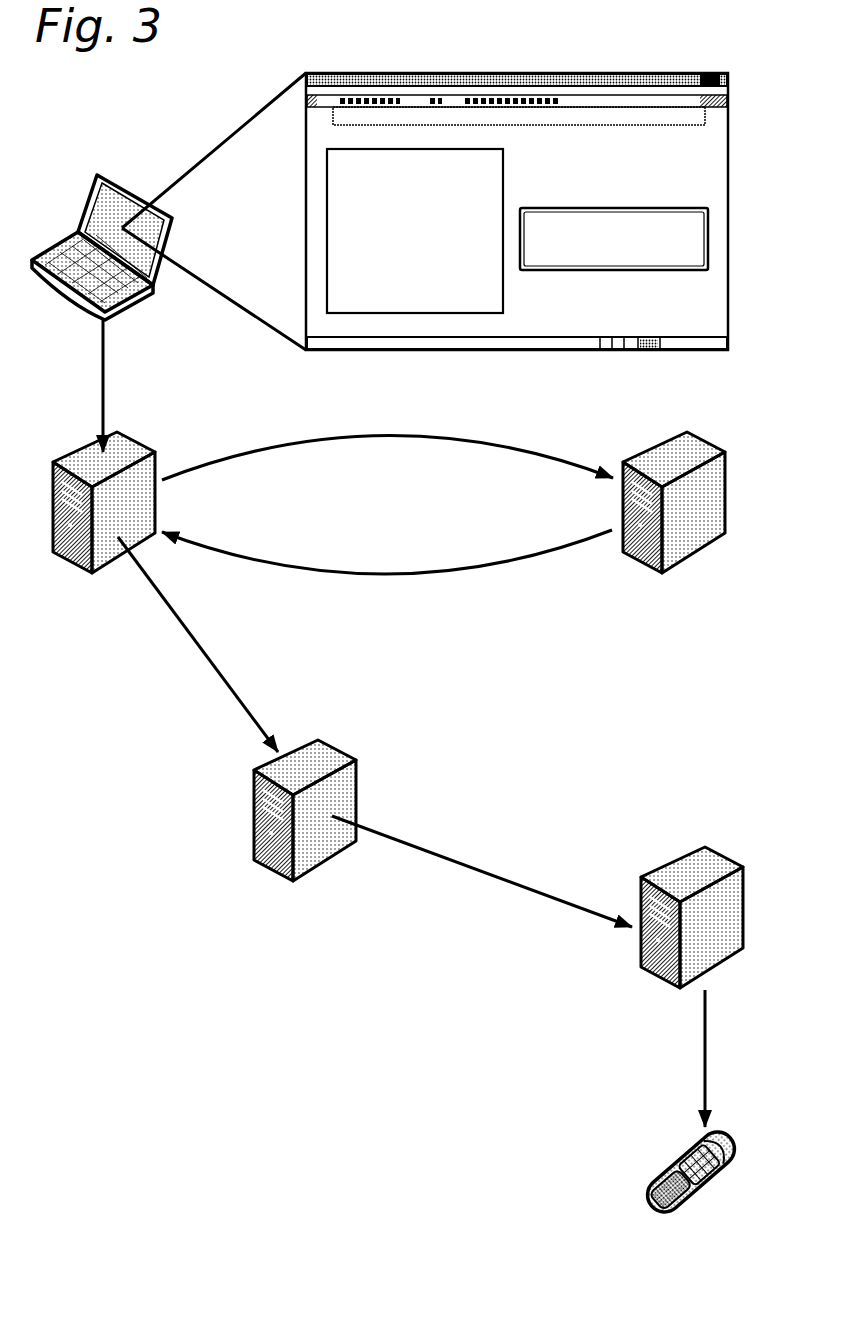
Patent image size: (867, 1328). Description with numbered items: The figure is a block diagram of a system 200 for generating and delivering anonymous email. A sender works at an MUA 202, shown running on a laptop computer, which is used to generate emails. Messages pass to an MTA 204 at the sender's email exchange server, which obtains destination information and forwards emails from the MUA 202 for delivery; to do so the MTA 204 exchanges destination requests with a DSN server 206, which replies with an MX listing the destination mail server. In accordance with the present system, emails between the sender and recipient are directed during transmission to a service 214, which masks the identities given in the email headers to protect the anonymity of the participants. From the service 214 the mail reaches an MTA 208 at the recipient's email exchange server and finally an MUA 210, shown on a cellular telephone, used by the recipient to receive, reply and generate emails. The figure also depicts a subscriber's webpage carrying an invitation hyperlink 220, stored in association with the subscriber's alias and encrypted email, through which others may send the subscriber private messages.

The system 200 is at (84, 774).
The MUA 202 is at (122, 183).
The MTA 204 is at (137, 438).
The DSN server 206 is at (705, 438).
The MTA 208 is at (723, 853).
The MUA 210 is at (718, 1132).
The service 214 is at (337, 746).
The hyperlink 220 is at (706, 232).